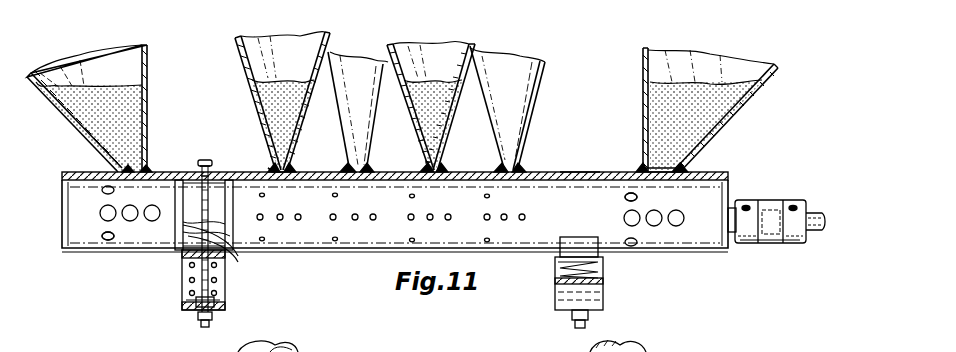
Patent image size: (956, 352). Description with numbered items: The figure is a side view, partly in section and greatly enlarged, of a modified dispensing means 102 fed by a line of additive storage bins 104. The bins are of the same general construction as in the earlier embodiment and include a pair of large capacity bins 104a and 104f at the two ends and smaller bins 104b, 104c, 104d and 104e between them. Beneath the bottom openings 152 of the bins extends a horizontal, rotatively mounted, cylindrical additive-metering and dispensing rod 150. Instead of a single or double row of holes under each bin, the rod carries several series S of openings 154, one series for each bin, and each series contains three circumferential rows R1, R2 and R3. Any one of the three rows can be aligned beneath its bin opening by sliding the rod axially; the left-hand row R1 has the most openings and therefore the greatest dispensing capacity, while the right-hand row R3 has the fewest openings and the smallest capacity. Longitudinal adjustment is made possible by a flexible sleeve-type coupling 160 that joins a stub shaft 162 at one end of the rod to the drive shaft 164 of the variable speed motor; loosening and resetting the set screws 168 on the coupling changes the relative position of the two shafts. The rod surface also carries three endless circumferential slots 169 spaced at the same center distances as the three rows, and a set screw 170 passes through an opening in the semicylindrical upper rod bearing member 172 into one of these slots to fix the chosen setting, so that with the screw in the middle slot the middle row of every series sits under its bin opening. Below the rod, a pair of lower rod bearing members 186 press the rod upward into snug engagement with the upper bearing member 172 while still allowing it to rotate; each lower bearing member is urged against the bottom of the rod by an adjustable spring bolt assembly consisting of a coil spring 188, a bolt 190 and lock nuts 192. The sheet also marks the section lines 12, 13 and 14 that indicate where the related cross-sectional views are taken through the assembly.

The dispensing means 102 is at (496, 262).
The additive storage bins 104 is at (118, 94).
The large capacity bin 104a is at (150, 62).
The smaller bin 104b is at (330, 40).
The smaller bin 104c is at (338, 140).
The smaller bin 104d is at (410, 140).
The smaller bin 104e is at (484, 142).
The large capacity bin 104f is at (750, 104).
The section line for FIG. 12 is at (163, 155).
The section line for FIG. 13 is at (370, 351).
The section line for FIG. 14 is at (507, 216).
The additive-metering and dispensing rod 150 is at (712, 256).
The bottom openings 152 is at (275, 162).
The openings 154 is at (140, 244).
The flexible sleeve-type coupling 160 is at (787, 212).
The stub shaft 162 is at (756, 248).
The drive shaft 164 is at (812, 234).
The set screws 168 is at (792, 204).
The circumferential slots 169 is at (228, 253).
The set screw 170 is at (209, 162).
The semicylindrical upper rod bearing member 172 is at (562, 172).
The lower rod bearing members 186 is at (176, 258).
The coil spring 188 is at (222, 290).
The bolt 190 is at (214, 320).
The lock nuts 192 is at (186, 312).
The left-hand row of openings R1 is at (632, 258).
The middle row of openings R2 is at (654, 258).
The right-hand row of openings R3 is at (676, 258).
The series of openings S is at (692, 292).